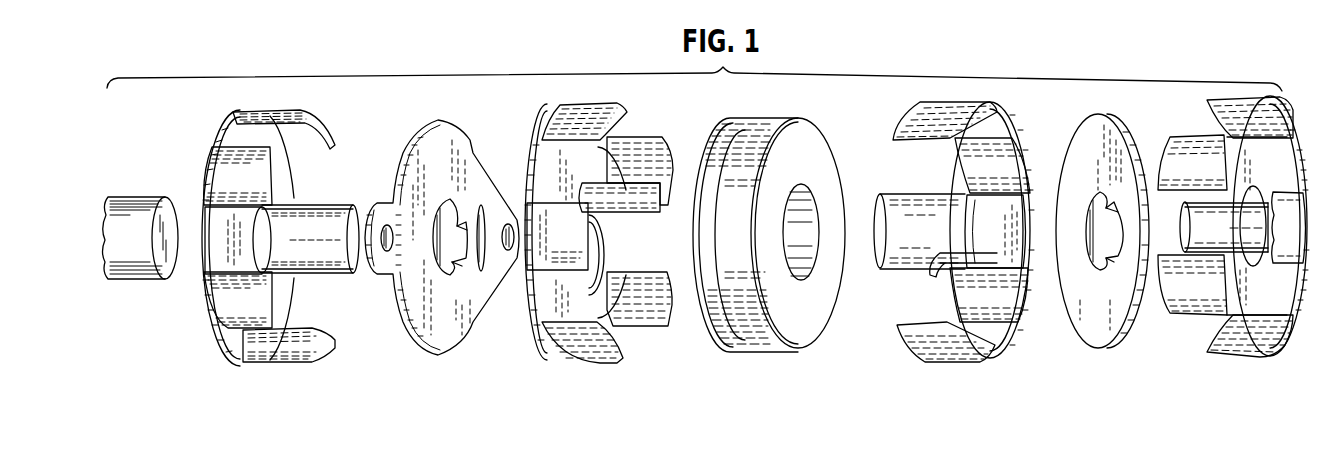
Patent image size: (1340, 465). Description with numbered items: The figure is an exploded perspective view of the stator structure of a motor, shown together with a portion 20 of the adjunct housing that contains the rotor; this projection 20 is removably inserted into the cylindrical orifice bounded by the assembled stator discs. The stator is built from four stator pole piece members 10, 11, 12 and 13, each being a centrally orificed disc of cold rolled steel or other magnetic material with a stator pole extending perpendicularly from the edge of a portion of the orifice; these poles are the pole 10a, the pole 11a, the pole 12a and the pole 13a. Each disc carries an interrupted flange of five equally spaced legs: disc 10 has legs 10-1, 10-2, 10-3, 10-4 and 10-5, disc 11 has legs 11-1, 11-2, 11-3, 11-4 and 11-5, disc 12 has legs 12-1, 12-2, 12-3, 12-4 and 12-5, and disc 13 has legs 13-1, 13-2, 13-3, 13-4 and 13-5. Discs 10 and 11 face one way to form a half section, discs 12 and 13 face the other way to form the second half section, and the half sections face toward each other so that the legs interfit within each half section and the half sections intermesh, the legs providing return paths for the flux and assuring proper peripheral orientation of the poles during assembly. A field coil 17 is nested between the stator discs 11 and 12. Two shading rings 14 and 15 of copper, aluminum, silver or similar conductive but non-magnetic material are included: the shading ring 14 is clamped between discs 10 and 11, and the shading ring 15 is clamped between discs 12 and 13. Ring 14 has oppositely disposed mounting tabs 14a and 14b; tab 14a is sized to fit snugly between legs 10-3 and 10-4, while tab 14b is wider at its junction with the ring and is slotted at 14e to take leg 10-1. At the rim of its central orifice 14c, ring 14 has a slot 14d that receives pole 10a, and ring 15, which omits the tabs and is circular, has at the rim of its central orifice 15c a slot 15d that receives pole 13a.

The stator pole piece member 10 is at (264, 248).
The flange leg 10-1 is at (323, 200).
The stator pole 10a is at (356, 217).
The flange leg 10-2 is at (323, 357).
The flange leg 10-3 is at (247, 325).
The flange leg 10-4 is at (222, 170).
The flange leg 10-5 is at (325, 130).
The stator pole piece member 11 is at (615, 244).
The flange leg 11-1 is at (667, 152).
The flange leg 11-2 is at (667, 327).
The flange leg 11-3 is at (593, 367).
The flange leg 11-4 is at (580, 257).
The flange leg 11-5 is at (607, 103).
The stator pole 11a is at (627, 220).
The stator pole piece member 12 is at (959, 254).
The flange leg 12-1 is at (980, 313).
The flange leg 12-2 is at (907, 360).
The flange leg 12-3 is at (877, 203).
The flange leg 12-4 is at (900, 123).
The flange leg 12-5 is at (1017, 150).
The stator pole 12a is at (930, 280).
The stator pole piece member 13 is at (1237, 227).
The flange leg 13-1 is at (1280, 265).
The flange leg 13-2 is at (1225, 357).
The flange leg 13-3 is at (1190, 323).
The flange leg 13-4 is at (1183, 140).
The flange leg 13-5 is at (1230, 103).
The stator pole 13a is at (1162, 228).
The shading ring 14 is at (443, 256).
The mounting tab 14a is at (393, 273).
The mounting tab 14b is at (515, 217).
The central opening of plate 14 14c is at (435, 265).
The slot 14d is at (460, 208).
The slot 14e is at (483, 267).
The shading ring 15 is at (1095, 252).
The central opening of disc 15 15c is at (1090, 250).
The slot 15d is at (1123, 203).
The field coil 17 is at (757, 347).
The projection of adjunct housing 20 is at (132, 278).